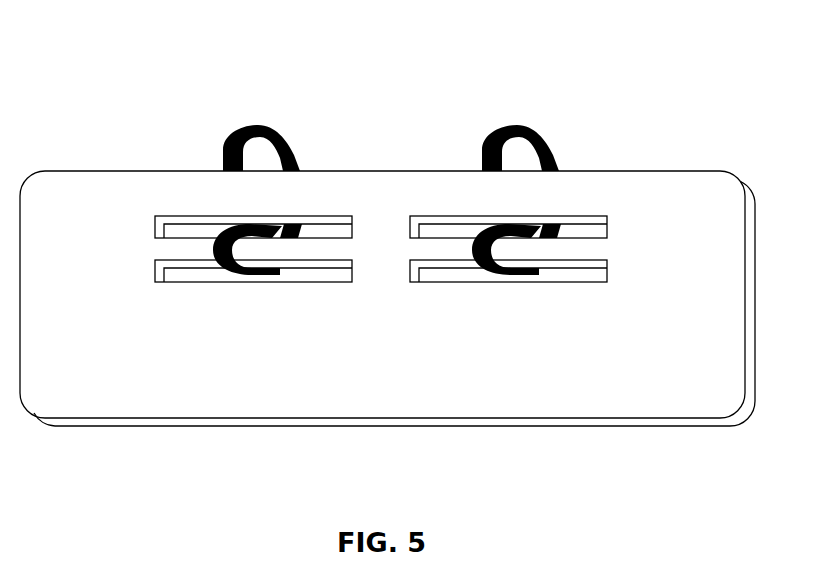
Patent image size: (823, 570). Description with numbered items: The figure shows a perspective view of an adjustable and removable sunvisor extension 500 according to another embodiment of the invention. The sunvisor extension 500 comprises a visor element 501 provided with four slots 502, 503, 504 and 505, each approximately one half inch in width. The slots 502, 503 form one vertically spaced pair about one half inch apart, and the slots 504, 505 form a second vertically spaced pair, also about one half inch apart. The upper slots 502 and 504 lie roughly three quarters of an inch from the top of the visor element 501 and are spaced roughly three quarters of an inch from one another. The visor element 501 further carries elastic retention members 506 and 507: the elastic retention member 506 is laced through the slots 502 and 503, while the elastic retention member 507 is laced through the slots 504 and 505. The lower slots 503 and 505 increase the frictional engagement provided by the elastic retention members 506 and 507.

The sunvisor extension 500 is at (683, 137).
The visor element 501 is at (115, 185).
The slot 502 is at (199, 232).
The slot 503 is at (195, 278).
The slot 504 is at (446, 232).
The slot 505 is at (446, 273).
The elastic retention member 506 is at (266, 128).
The elastic retention member 507 is at (530, 128).